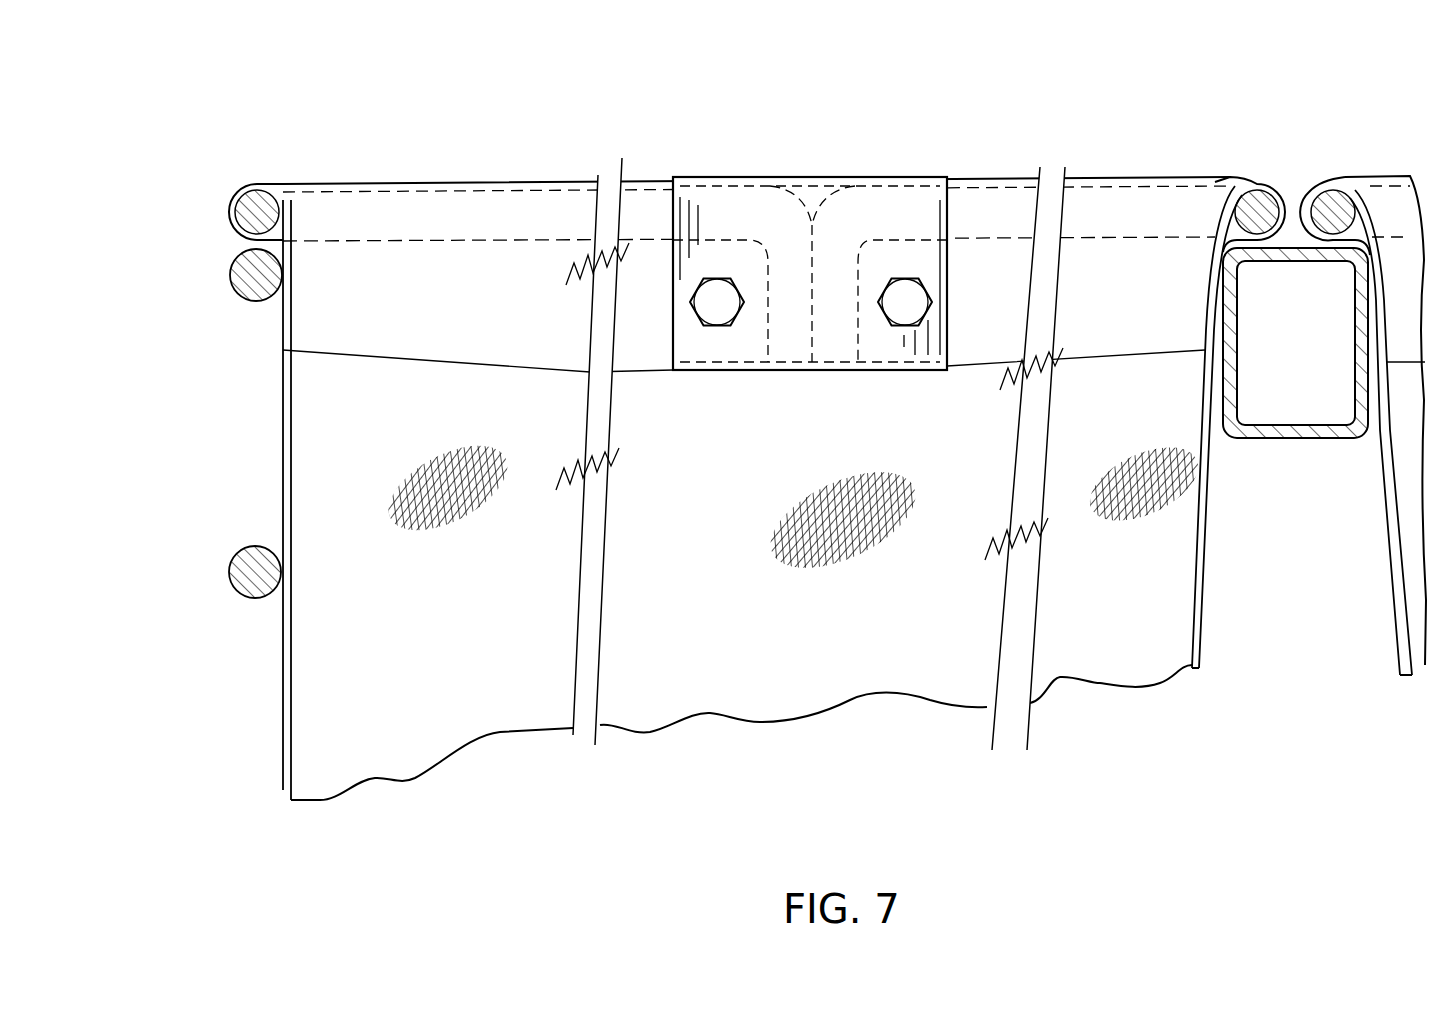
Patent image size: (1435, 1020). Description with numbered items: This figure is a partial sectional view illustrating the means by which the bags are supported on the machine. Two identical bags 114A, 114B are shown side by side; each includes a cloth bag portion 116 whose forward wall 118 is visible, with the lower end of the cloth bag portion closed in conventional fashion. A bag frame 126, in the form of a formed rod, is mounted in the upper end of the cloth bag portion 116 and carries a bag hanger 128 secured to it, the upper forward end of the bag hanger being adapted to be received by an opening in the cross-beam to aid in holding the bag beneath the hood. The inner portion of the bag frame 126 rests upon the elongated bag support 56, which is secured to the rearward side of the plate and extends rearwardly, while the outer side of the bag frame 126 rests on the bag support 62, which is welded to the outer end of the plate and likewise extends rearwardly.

The bag 114B is at (477, 182).
The bag hanger 128 is at (820, 177).
The bag frame 126 is at (1313, 188).
The bag 114A is at (1385, 175).
The bag support 62 is at (243, 287).
The elongated bag support 56 is at (1290, 437).
The cloth bag portion 116 is at (1203, 598).
The forward wall 118 is at (724, 622).